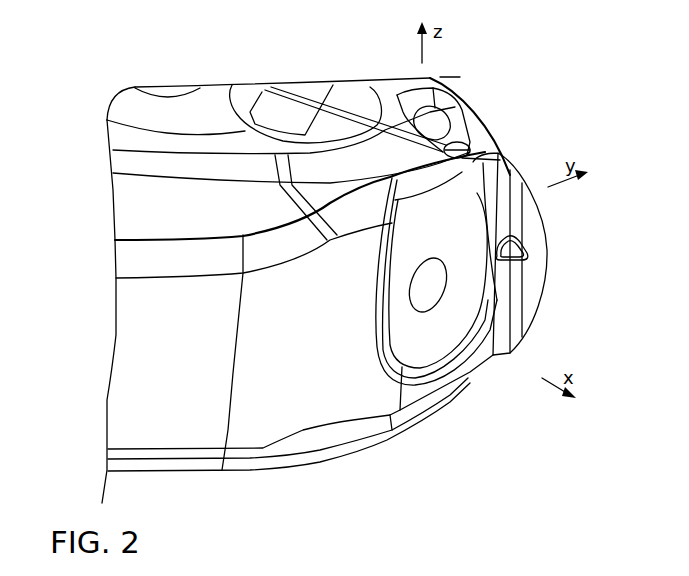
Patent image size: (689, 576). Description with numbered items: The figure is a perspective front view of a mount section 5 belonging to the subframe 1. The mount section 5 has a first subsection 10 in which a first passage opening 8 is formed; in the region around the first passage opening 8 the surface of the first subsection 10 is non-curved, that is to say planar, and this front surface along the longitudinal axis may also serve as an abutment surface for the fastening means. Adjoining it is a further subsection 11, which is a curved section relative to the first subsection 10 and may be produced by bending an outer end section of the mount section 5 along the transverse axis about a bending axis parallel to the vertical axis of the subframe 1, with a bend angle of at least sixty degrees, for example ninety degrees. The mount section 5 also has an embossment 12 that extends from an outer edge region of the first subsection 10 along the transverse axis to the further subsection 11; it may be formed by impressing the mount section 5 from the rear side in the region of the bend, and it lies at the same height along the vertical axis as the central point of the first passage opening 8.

The subframe 1 is at (335, 437).
The mount section 5 is at (433, 418).
The first passage opening 8 is at (428, 280).
The first subsection 10 is at (470, 359).
The further subsection 11 is at (538, 249).
The embossment 12 is at (513, 253).